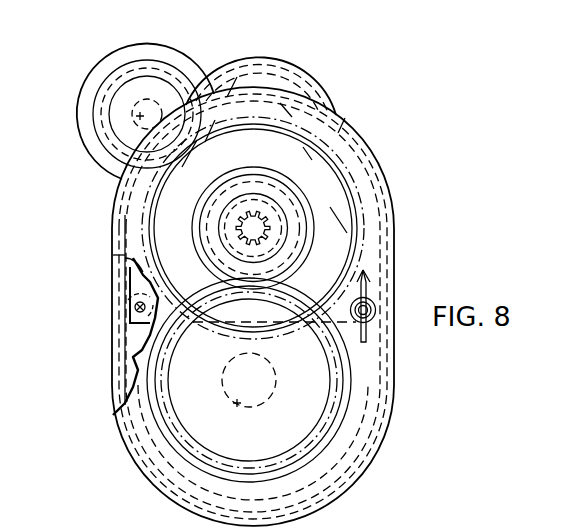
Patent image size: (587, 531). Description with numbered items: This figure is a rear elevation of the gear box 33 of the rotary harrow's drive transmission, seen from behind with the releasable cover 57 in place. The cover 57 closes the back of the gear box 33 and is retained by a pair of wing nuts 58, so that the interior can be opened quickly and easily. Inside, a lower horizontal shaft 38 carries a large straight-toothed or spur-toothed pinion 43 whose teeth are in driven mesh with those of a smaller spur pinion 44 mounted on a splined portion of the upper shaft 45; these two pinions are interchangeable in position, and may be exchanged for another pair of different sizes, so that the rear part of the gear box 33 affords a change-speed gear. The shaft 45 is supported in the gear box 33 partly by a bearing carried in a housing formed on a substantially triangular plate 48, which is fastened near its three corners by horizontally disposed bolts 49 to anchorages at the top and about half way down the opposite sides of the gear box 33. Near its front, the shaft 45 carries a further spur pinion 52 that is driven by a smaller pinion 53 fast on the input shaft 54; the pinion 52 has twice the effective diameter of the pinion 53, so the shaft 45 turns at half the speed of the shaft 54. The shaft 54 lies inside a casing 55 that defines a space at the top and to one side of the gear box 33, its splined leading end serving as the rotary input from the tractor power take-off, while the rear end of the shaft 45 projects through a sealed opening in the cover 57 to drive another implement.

The gear box 33 is at (117, 388).
The shaft 38 is at (237, 405).
The straight-toothed or spur-toothed pinion 43 is at (333, 438).
The straight-toothed or spur-toothed pinion 44 is at (305, 200).
The shaft 45 is at (268, 230).
The substantially triangular plate 48 is at (127, 278).
The bolts 49 is at (293, 75).
The straight-toothed or spur-toothed pinion 52 is at (333, 133).
The straight-toothed or spur-toothed pinion 53 is at (107, 153).
The shaft 54 is at (136, 116).
The casing 55 is at (93, 70).
The cover 57 is at (117, 432).
The wing nuts 58 is at (367, 340).